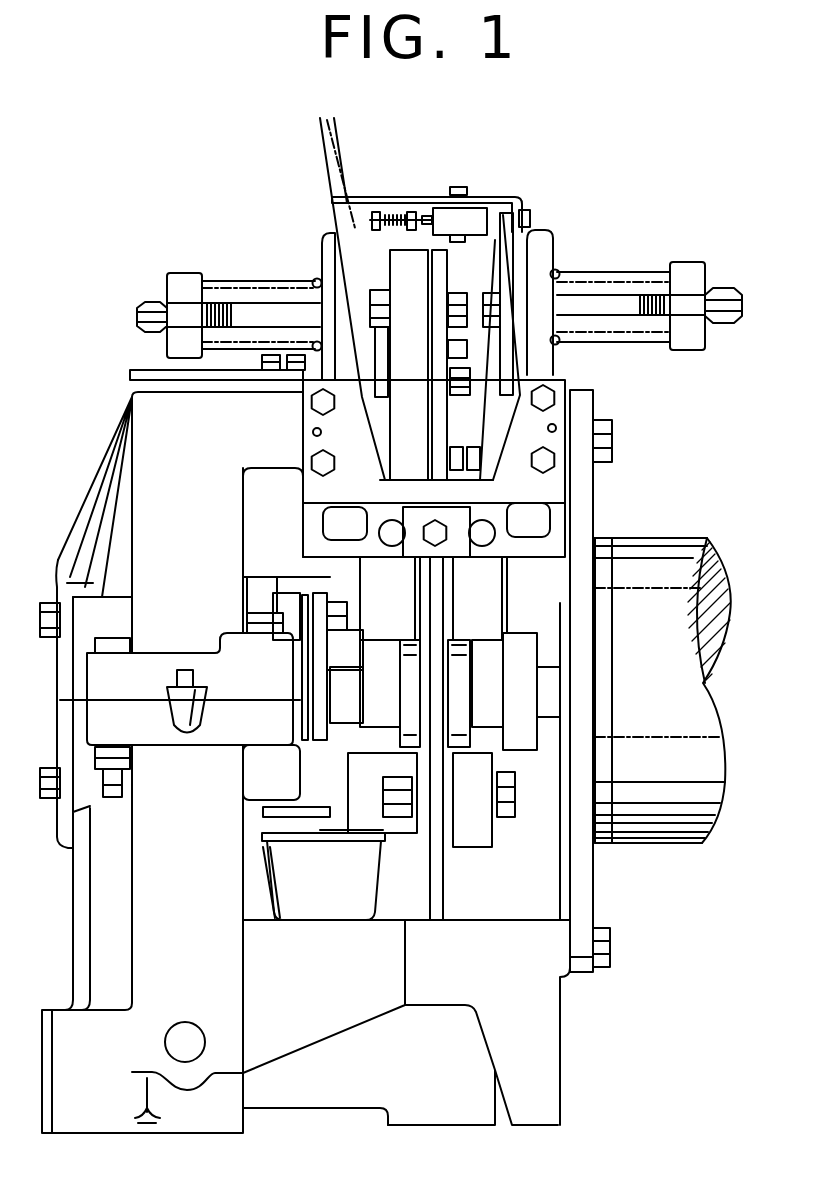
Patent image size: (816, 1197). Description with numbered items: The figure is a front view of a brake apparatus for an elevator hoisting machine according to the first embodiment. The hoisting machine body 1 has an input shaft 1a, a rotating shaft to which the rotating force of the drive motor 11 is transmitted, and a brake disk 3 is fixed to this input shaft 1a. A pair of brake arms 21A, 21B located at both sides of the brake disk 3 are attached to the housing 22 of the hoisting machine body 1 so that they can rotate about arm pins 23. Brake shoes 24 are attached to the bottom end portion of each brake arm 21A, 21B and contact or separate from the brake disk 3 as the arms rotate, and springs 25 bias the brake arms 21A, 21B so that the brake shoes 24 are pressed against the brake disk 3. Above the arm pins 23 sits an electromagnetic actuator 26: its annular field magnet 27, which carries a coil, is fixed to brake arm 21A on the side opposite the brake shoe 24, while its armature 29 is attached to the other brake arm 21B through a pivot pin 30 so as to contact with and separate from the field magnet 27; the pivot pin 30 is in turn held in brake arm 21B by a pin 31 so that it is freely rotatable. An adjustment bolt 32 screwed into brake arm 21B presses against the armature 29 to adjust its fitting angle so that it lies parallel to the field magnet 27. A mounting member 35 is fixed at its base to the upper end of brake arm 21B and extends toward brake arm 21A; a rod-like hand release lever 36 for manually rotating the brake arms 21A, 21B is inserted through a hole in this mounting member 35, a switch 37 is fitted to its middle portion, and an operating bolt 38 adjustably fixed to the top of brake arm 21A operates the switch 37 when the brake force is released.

The hoisting machine body 1 is at (160, 455).
The input shaft 1a is at (330, 745).
The brake disk 3 is at (435, 873).
The drive motor 11 is at (663, 845).
The brake arm 21A is at (377, 607).
The brake arm 21B is at (493, 603).
The housing 22 is at (560, 367).
The arm pin 23 is at (555, 510).
The brake shoe 24 is at (450, 720).
The spring 25 is at (268, 282).
The electromagnetic actuator 26 is at (405, 280).
The field magnet 27 is at (440, 270).
The armature 29 is at (450, 330).
The pivot pin 30 is at (475, 352).
The pin 31 is at (490, 372).
The adjustment bolt 32 is at (540, 483).
The mounting member 35 is at (425, 200).
The hand release lever 36 is at (330, 188).
The switch 37 is at (468, 218).
The operating bolt 38 is at (400, 213).